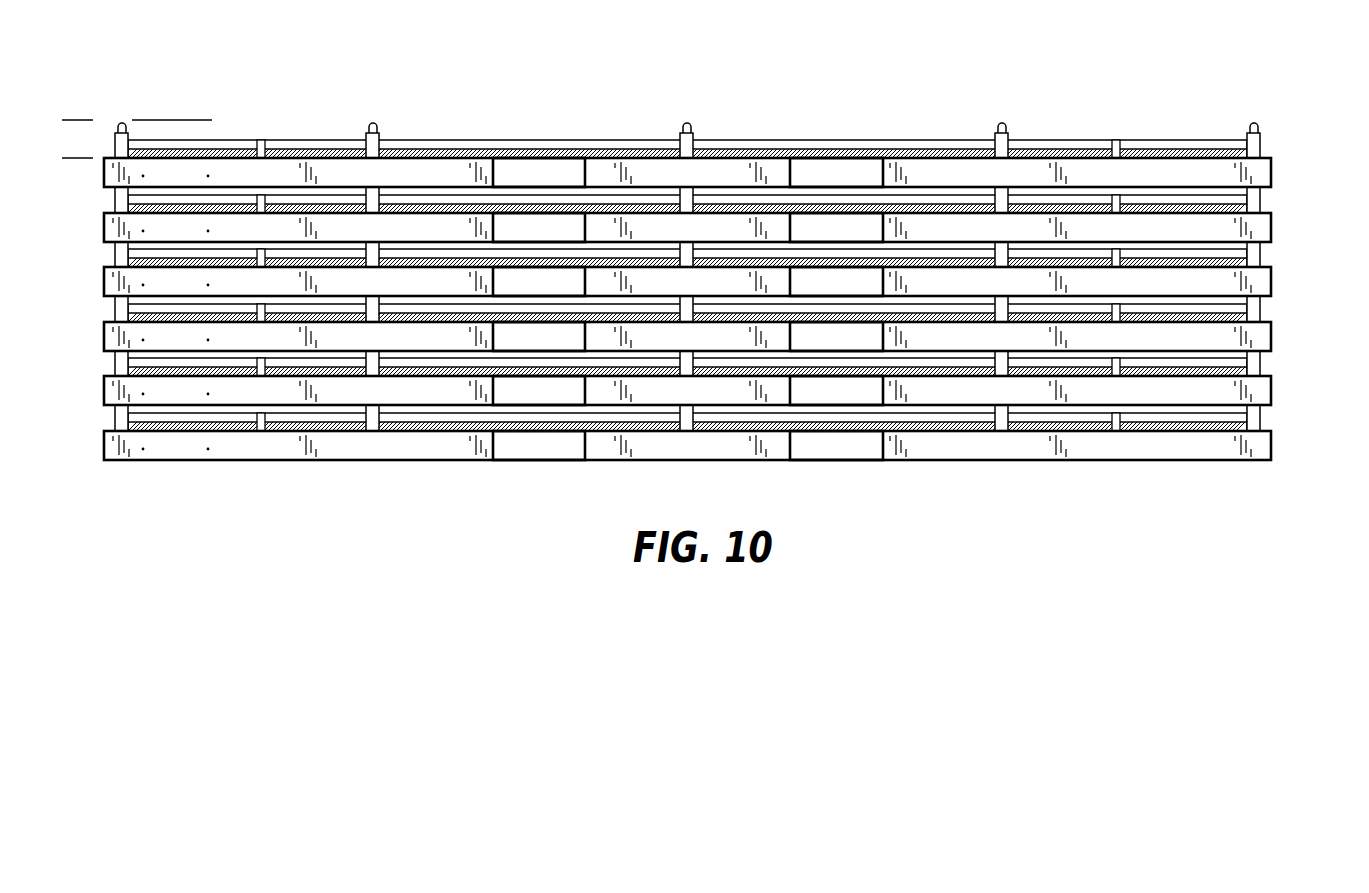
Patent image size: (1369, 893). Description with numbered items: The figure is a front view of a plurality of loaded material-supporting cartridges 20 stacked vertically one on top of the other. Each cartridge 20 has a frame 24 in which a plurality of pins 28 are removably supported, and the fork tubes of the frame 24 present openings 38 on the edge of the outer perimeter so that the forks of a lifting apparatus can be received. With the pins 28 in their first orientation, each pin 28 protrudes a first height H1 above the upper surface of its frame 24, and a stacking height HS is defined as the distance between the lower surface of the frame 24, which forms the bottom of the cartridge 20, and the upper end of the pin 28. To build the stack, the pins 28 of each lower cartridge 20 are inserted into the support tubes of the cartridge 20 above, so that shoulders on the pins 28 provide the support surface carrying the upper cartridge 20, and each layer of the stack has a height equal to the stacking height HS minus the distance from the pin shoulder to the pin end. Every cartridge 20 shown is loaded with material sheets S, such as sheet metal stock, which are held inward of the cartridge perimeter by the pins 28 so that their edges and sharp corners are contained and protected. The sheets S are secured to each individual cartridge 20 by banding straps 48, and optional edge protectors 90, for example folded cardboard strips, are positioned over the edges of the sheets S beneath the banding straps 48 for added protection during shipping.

The material-supporting cartridge 20 is at (736, 258).
The frame 24 is at (964, 175).
The pin 28 is at (122, 124).
The opening 38 is at (560, 165).
The banding strap 48 is at (261, 146).
The edge protector 90 is at (645, 143).
The material sheet S is at (336, 158).
The stacking height HS is at (196, 233).
The first height H1 is at (78, 82).